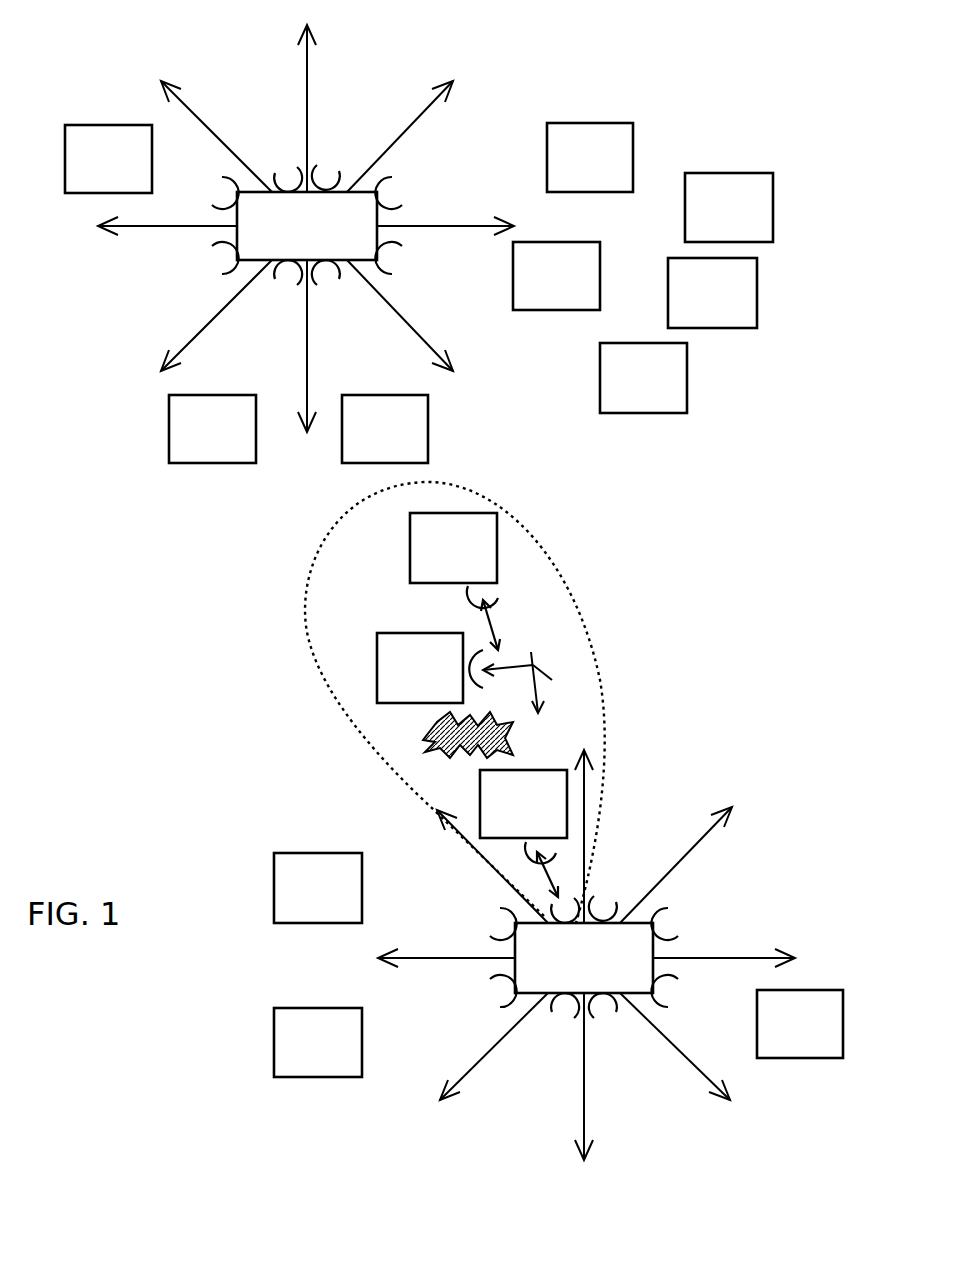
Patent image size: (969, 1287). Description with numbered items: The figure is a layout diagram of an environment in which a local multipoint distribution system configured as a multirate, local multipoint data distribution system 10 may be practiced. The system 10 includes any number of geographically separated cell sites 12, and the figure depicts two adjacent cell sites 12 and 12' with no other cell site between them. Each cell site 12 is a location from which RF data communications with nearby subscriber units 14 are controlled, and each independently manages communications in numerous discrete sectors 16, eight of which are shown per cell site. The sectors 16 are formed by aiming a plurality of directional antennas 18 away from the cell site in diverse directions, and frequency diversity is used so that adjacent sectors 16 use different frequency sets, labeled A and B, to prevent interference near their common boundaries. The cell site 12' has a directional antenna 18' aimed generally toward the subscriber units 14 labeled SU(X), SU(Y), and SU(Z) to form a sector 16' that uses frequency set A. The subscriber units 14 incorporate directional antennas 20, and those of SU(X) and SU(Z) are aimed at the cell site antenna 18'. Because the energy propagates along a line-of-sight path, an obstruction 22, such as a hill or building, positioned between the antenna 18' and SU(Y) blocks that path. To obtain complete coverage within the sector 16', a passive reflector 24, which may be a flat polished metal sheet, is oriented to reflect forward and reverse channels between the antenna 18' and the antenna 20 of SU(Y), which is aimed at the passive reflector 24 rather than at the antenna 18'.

The multirate local multipoint data distribution system 10 is at (188, 1135).
The cell site 12 is at (285, 251).
The cell site 12' is at (551, 988).
The subscriber unit 14 is at (445, 592).
The sector 16 is at (446, 592).
The sector 16' is at (431, 702).
The directional antenna 18 is at (446, 632).
The directional antenna 18' is at (617, 859).
The directional antenna 20 is at (468, 590).
The obstruction 22 is at (426, 728).
The passive reflector 24 is at (531, 652).